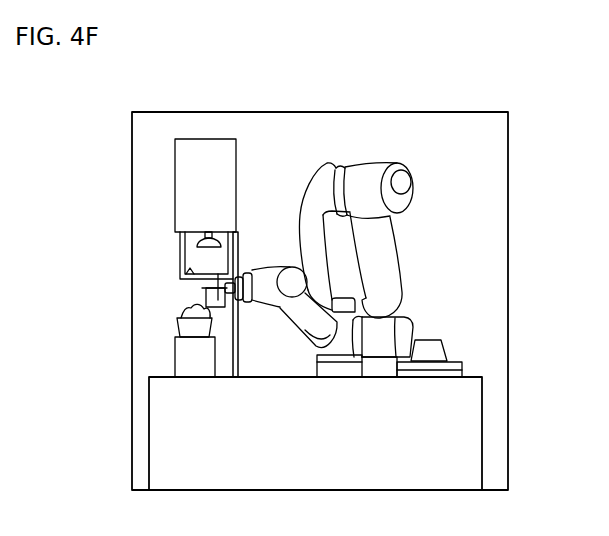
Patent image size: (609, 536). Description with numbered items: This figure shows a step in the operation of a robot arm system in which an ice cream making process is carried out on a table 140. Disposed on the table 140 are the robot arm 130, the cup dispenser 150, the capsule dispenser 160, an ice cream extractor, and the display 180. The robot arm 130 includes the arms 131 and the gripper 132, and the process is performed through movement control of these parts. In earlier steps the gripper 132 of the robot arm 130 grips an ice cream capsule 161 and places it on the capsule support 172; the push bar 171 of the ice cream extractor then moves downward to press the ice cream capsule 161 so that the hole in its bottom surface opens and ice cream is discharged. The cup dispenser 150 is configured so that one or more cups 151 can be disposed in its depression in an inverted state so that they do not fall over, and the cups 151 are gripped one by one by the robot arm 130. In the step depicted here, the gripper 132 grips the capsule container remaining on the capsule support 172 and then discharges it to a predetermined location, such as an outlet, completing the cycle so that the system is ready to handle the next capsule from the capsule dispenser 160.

The robot arm 130 is at (397, 270).
The arms 131 is at (385, 252).
The gripper 132 is at (202, 289).
The table 140 is at (477, 397).
The cup dispenser 150 is at (478, 367).
The cups 151 is at (177, 319).
The capsule dispenser 160 is at (185, 355).
The ice cream capsule 161 is at (180, 246).
The push bar 171 is at (207, 238).
The capsule support 172 is at (190, 271).
The display 180 is at (178, 177).